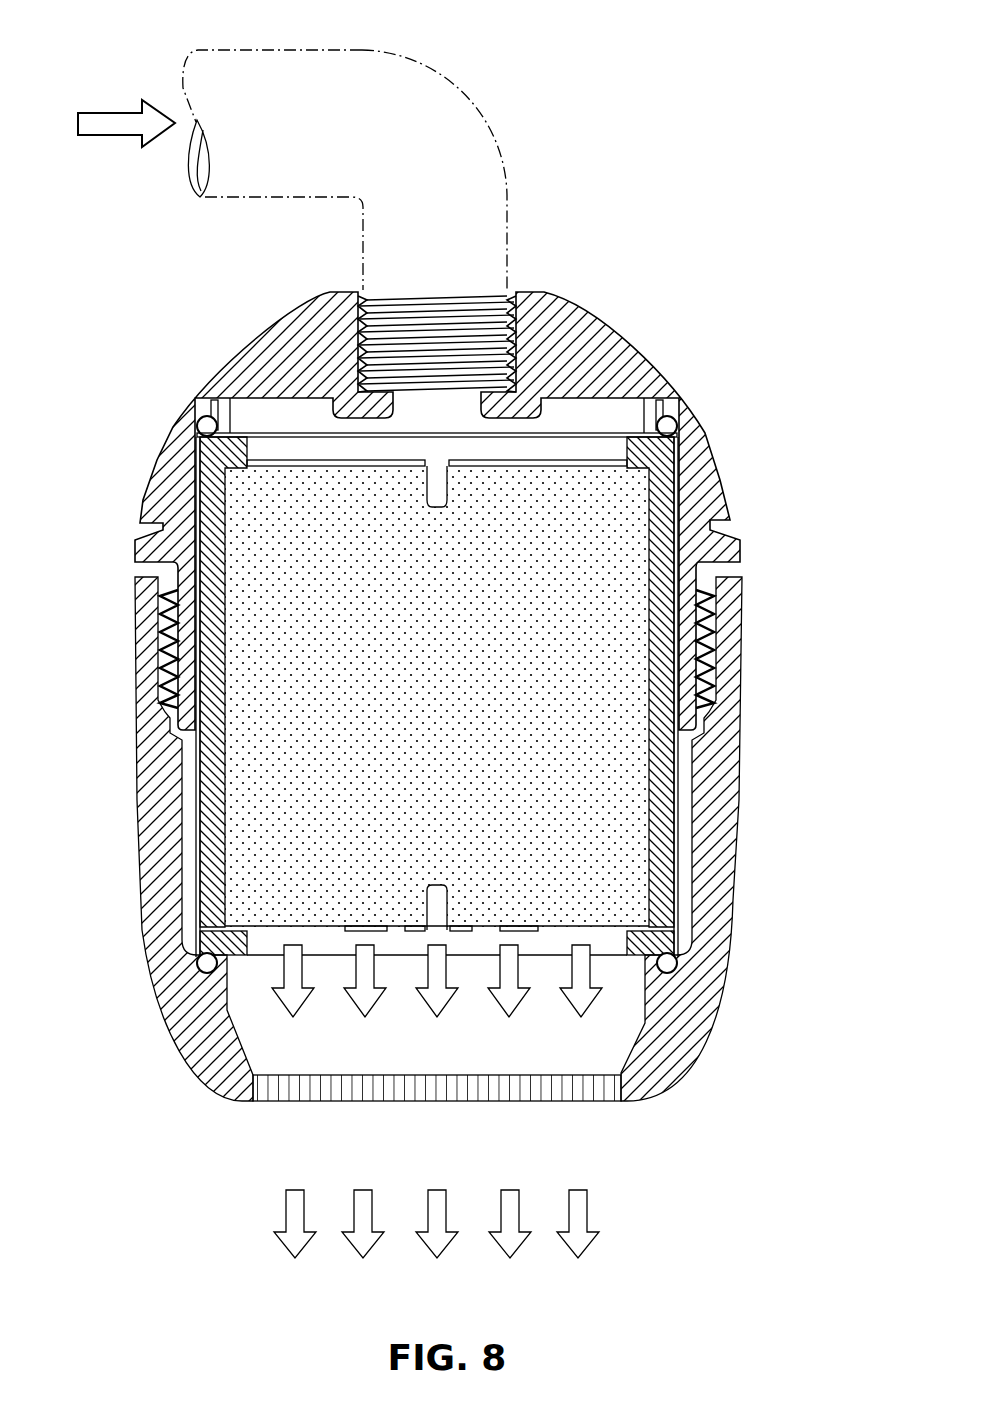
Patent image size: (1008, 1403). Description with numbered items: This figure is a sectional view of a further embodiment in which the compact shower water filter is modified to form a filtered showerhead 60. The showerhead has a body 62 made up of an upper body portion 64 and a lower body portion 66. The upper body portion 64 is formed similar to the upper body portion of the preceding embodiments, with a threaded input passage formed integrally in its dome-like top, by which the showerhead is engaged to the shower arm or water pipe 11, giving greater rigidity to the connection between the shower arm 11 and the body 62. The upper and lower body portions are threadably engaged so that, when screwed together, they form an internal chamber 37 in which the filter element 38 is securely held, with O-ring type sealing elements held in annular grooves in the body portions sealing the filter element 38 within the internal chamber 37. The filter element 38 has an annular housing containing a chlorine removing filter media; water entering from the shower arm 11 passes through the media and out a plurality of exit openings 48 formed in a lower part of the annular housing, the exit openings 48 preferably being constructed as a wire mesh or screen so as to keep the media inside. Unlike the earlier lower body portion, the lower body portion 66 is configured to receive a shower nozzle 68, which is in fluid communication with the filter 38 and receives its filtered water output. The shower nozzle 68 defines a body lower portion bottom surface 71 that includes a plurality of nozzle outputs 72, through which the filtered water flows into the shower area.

The shower arm 11 is at (404, 62).
The internal chamber 37 is at (188, 782).
The filter element 38 is at (657, 510).
The exit openings 48 is at (389, 925).
The filtered showerhead 60 is at (802, 418).
The body 62 is at (750, 680).
The upper body portion 64 is at (662, 382).
The lower body portion 66 is at (733, 795).
The shower nozzle 68 is at (590, 1064).
The body lower portion bottom surface 71 is at (545, 1090).
The nozzle outputs 72 is at (265, 1092).